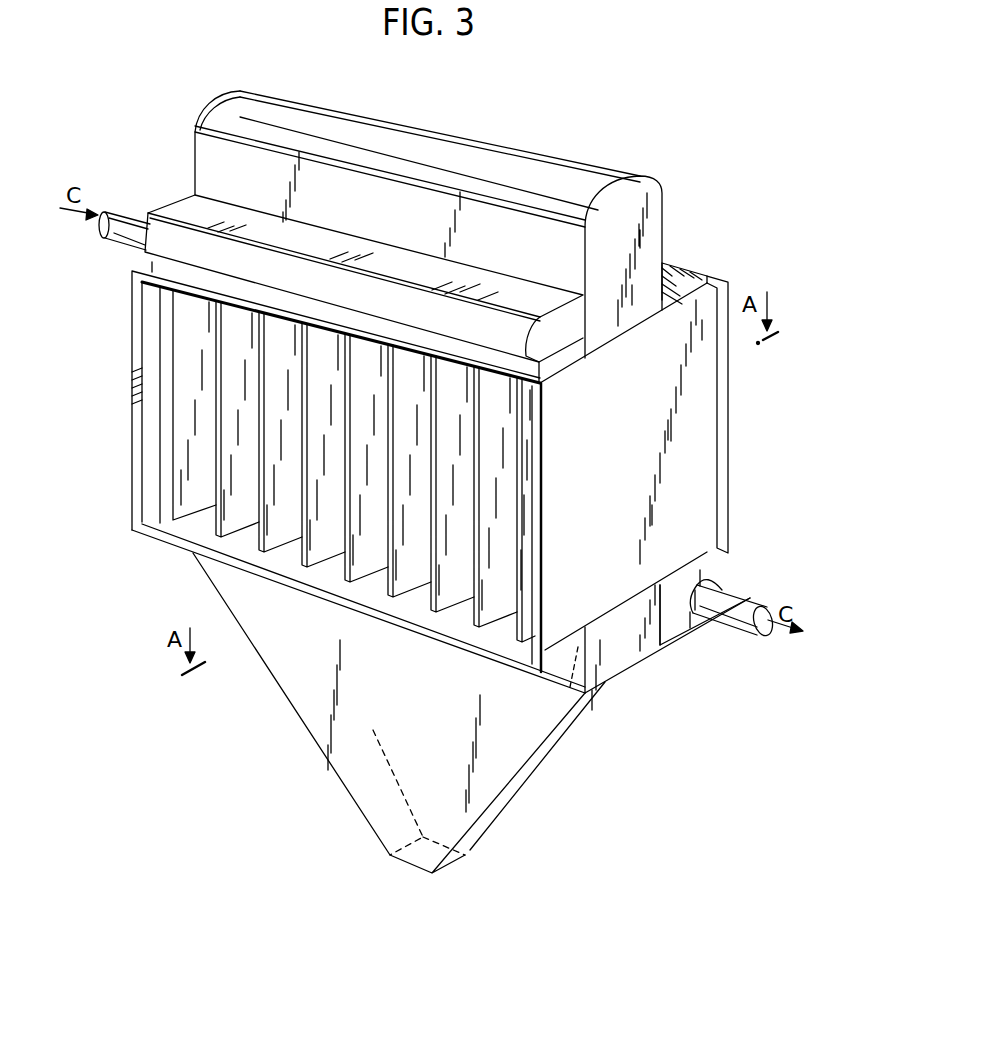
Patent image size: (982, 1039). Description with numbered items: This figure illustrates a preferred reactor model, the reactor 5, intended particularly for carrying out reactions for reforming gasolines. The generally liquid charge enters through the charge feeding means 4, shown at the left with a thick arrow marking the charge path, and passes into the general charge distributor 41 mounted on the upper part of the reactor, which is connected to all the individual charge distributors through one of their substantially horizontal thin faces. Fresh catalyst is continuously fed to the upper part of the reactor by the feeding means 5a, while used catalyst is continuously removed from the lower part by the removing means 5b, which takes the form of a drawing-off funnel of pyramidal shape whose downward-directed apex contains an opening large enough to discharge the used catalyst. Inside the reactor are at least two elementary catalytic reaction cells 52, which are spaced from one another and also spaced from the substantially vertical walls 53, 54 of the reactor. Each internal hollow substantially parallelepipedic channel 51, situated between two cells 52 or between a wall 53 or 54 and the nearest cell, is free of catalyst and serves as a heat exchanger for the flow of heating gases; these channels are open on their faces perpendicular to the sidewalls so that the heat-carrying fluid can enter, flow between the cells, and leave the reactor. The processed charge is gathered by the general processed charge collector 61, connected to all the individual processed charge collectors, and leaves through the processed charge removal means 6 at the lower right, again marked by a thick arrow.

The reactor 5 is at (676, 141).
The means for continuously feeding fresh catalyst 5a is at (513, 165).
The means for continuously removing the used catalyst 5b is at (372, 797).
The means for feeding a generally liquid charge 4 is at (127, 234).
The general charge distributor 41 is at (192, 210).
The substantially vertical wall 54 is at (150, 318).
The internal hollow substantially parallelepipedic channel 51 is at (225, 538).
The elementary catalytic reaction cell 52 is at (200, 522).
The substantially vertical wall 53 is at (708, 404).
The general processed charge collector 61 is at (673, 622).
The means for removing the processed charge 6 is at (736, 618).